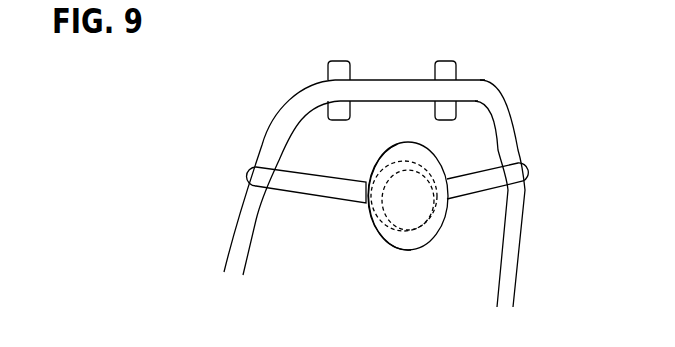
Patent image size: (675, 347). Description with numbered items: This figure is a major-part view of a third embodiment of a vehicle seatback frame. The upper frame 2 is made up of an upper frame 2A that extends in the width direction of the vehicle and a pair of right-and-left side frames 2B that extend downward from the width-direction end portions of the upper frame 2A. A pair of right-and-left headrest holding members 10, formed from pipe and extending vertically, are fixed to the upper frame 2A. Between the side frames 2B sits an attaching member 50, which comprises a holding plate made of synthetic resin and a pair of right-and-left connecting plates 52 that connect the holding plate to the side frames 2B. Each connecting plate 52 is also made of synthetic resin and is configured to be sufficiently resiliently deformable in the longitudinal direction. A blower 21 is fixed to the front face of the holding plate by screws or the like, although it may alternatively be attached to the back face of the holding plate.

The upper frame 2 is at (527, 260).
The upper frame 2A is at (391, 88).
The side frames 2B is at (237, 230).
The headrest holding members 10 is at (338, 67).
The blower 21 is at (432, 216).
The attaching member 50 is at (400, 243).
The connecting plates 52 is at (313, 186).